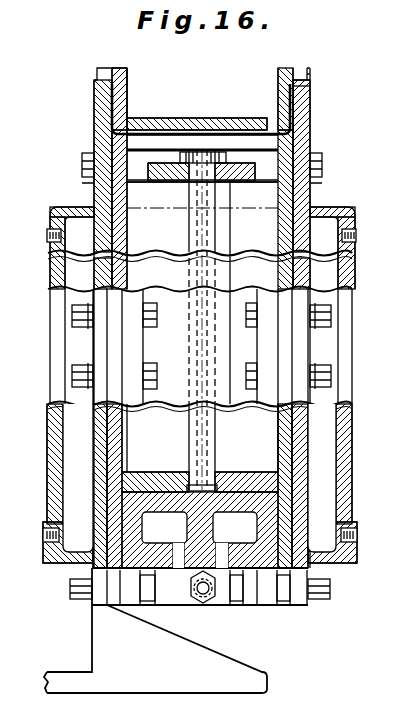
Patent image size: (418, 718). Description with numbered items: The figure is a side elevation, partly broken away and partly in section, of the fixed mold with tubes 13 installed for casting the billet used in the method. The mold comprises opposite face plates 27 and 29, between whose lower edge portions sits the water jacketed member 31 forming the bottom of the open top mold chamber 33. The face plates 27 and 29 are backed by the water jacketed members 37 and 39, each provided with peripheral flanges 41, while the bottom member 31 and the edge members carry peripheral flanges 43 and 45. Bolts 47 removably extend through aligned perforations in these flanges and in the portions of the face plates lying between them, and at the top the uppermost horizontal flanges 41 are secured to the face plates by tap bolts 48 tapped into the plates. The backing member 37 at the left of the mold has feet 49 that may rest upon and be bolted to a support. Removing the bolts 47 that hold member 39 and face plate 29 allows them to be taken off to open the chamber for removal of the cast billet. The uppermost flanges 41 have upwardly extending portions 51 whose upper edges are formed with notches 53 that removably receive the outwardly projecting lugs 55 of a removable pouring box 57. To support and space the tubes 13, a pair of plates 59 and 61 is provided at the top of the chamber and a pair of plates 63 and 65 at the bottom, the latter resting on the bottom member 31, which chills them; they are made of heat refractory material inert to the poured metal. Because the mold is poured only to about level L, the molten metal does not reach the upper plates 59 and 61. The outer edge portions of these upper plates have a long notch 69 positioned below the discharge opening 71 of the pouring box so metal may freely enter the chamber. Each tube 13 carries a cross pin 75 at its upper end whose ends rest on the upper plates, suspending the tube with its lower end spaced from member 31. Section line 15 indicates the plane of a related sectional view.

The tube 13 is at (214, 632).
The section line 15- 15 is at (330, 457).
The face plate 27 is at (127, 240).
The face plate 29 is at (279, 194).
The water jacketed member 31 is at (180, 500).
The mold chamber 33 is at (265, 249).
The water jacketed member 37 is at (68, 208).
The water jacketed member 39 is at (340, 213).
The peripheral flange 41 is at (94, 186).
The peripheral flange 43 is at (132, 596).
The peripheral flange 45 is at (133, 341).
The bolt 47 is at (77, 323).
The tap bolt 48 is at (82, 158).
The feet 49 is at (167, 678).
The upwardly extending portion 51 is at (96, 109).
The notch 53 is at (312, 90).
The lug 55 is at (309, 71).
The pouring box 57 is at (281, 70).
The plate 59 is at (195, 116).
The plate 61 is at (243, 150).
The plate 63 is at (149, 472).
The plate 65 is at (249, 472).
The long notch 69 is at (163, 165).
The discharge opening 71 is at (139, 172).
The cross pin 75 is at (184, 153).